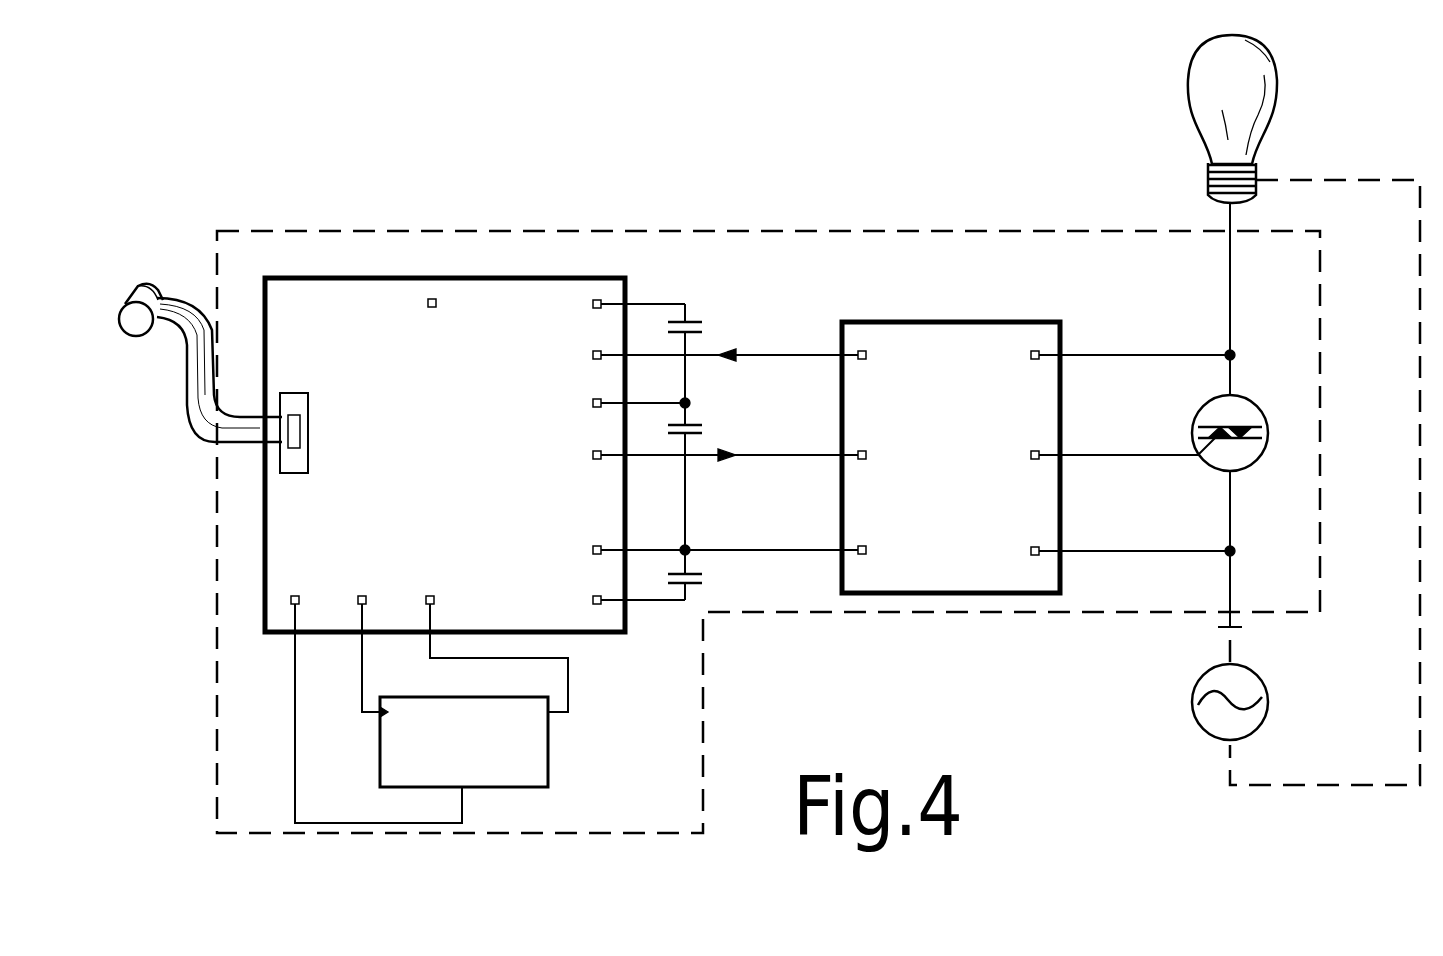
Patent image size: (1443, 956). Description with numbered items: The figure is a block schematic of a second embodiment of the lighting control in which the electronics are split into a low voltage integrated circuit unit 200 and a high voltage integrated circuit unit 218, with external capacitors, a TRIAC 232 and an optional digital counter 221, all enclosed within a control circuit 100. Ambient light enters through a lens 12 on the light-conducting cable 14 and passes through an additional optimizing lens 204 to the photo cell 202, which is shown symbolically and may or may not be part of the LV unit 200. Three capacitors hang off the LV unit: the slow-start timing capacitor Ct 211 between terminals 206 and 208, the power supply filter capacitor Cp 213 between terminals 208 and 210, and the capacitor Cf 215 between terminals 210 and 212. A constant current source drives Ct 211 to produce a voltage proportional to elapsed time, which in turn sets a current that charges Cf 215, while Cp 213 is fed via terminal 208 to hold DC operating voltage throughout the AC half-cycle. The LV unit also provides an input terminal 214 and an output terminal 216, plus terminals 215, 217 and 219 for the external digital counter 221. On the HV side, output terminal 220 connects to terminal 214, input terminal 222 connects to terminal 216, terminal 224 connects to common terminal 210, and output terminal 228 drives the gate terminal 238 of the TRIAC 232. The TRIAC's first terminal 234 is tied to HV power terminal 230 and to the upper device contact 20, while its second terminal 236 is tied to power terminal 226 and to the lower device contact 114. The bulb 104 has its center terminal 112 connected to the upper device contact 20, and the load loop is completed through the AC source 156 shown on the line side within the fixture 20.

The lens 12 is at (127, 330).
The light-conducting cable 14 is at (186, 412).
The upper device contact 20 is at (1240, 205).
The control circuit 100 is at (418, 230).
The bulb 104 is at (1205, 95).
The center terminal 112 is at (1212, 185).
The lower device contact 114 is at (1232, 628).
The AC power source 156 is at (1268, 705).
The low voltage integrated circuit unit 200 is at (546, 278).
The photo cell 202 is at (300, 473).
The additional lens 204 is at (300, 400).
The terminal 206 is at (588, 308).
The terminal 208 is at (601, 405).
The terminal 210 is at (592, 547).
The slow-start timing capacitor Ct 211 is at (696, 310).
The terminal 212 is at (604, 606).
The power supply filter capacitor Cp 213 is at (700, 423).
The input terminal 214 is at (590, 363).
The capacitor Cf 215 is at (692, 572).
The output terminal 216 is at (604, 462).
The terminal 217 is at (358, 606).
The high voltage integrated circuit unit 218 is at (903, 322).
The terminal 219 is at (436, 602).
The output terminal 220 is at (860, 350).
The external digital counter 221 is at (550, 760).
The input terminal 222 is at (860, 461).
The terminal 224 is at (860, 556).
The power terminal 226 is at (1042, 549).
The output terminal 228 is at (1042, 452).
The power terminal 230 is at (1042, 352).
The TRIAC 232 is at (1250, 398).
The first terminal 234 is at (1228, 374).
The second terminal 236 is at (1230, 535).
The gate terminal 238 is at (1162, 457).